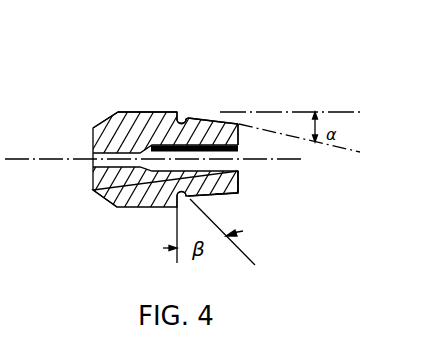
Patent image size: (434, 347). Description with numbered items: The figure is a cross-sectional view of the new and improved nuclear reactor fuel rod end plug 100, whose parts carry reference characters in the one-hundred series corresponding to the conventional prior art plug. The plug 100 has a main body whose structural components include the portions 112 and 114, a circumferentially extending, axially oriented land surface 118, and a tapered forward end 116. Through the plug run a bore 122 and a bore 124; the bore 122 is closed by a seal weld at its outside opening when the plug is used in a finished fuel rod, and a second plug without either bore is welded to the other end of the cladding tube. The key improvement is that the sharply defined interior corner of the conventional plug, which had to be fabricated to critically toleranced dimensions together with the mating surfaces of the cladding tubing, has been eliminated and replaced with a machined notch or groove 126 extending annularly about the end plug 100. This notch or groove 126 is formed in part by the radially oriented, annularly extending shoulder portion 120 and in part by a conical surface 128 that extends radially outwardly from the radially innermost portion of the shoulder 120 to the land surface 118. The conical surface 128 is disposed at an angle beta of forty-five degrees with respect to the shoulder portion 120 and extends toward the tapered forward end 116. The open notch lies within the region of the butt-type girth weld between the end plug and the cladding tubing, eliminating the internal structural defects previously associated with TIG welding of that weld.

The nuclear reactor fuel rod end plug 100 is at (203, 49).
The end plug body portion 112 is at (136, 111).
The end plug component 114 is at (217, 199).
The tapered forward end 116 is at (237, 186).
The land surface 118 is at (205, 117).
The shoulder portion 120 is at (181, 111).
The bore 122 is at (96, 178).
The bore 124 is at (238, 142).
The notch or groove 126 is at (178, 206).
The conical surface 128 is at (187, 119).